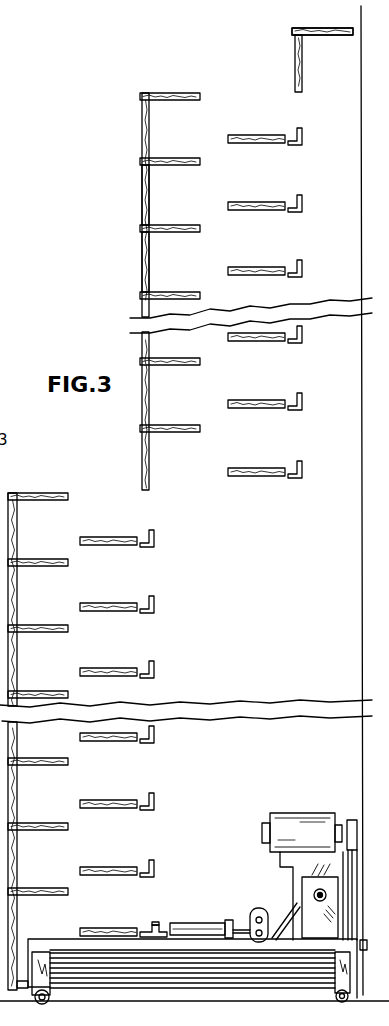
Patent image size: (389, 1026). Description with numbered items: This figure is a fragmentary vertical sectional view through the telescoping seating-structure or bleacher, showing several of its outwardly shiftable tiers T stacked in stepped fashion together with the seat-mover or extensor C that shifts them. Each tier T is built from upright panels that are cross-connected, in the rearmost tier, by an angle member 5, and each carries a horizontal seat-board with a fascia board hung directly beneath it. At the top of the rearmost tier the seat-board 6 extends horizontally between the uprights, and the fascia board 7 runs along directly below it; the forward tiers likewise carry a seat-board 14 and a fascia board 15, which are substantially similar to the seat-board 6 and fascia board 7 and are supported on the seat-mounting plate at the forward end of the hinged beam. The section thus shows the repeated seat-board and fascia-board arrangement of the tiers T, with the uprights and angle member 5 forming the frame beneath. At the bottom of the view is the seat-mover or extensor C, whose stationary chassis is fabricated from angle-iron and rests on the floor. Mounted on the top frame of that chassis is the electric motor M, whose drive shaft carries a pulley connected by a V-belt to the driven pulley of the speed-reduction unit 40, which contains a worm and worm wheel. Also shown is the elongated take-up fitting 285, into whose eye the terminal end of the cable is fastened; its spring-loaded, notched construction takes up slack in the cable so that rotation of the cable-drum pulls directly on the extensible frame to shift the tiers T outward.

The angle member 5 is at (302, 134).
The seat-board 6 is at (300, 29).
The fascia board 7 is at (293, 55).
The seat-board 14 is at (160, 93).
The fascia board 15 is at (142, 127).
The speed-reduction unit 40 is at (298, 888).
The take-up fitting 285 is at (182, 923).
The tier T is at (133, 203).
The electric motor M is at (283, 813).
The seat-mover or extensor C is at (237, 892).